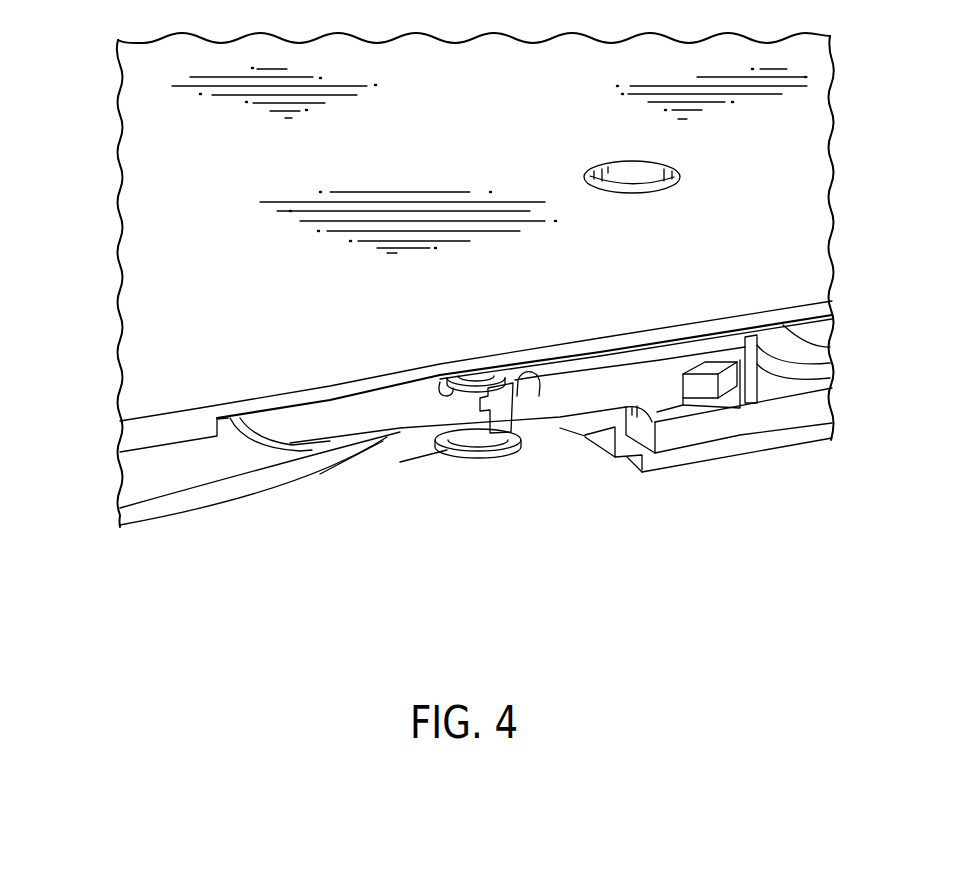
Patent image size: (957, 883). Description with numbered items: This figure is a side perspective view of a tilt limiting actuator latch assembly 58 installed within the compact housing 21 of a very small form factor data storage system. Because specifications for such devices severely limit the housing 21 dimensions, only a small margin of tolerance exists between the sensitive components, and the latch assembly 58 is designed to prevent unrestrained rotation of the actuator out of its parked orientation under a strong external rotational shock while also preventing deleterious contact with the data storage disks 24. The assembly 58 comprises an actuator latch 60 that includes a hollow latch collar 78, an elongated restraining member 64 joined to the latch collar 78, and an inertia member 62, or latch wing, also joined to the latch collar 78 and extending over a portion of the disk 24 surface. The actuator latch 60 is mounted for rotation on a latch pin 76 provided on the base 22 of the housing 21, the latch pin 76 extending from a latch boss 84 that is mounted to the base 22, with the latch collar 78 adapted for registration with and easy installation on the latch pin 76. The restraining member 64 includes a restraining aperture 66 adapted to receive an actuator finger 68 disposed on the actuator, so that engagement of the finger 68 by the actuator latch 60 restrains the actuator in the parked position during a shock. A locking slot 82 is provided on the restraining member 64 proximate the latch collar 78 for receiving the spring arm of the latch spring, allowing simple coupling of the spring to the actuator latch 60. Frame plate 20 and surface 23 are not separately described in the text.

The frame plate 20 is at (797, 368).
The housing 21 is at (118, 306).
The base 22 is at (798, 437).
The plate surface 23 is at (377, 152).
The data storage disk 24 is at (143, 481).
The tilt limiting actuator latch assembly 58 is at (453, 460).
The actuator latch 60 is at (398, 437).
The inertia member 62 is at (327, 420).
The elongated restraining member 64 is at (617, 366).
The restraining aperture 66 is at (677, 402).
The actuator finger 68 is at (718, 376).
The latch pin 76 is at (474, 375).
The latch collar 78 is at (438, 383).
The locking slot 82 is at (531, 397).
The latch boss 84 is at (495, 451).